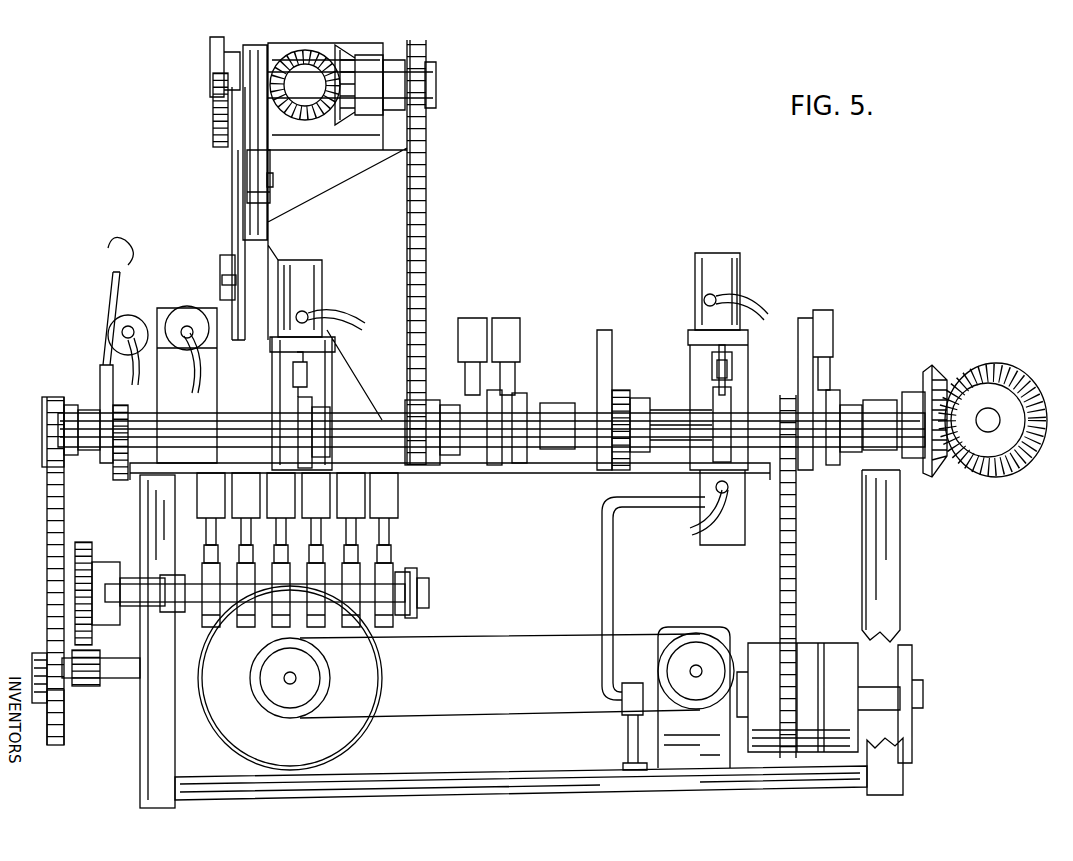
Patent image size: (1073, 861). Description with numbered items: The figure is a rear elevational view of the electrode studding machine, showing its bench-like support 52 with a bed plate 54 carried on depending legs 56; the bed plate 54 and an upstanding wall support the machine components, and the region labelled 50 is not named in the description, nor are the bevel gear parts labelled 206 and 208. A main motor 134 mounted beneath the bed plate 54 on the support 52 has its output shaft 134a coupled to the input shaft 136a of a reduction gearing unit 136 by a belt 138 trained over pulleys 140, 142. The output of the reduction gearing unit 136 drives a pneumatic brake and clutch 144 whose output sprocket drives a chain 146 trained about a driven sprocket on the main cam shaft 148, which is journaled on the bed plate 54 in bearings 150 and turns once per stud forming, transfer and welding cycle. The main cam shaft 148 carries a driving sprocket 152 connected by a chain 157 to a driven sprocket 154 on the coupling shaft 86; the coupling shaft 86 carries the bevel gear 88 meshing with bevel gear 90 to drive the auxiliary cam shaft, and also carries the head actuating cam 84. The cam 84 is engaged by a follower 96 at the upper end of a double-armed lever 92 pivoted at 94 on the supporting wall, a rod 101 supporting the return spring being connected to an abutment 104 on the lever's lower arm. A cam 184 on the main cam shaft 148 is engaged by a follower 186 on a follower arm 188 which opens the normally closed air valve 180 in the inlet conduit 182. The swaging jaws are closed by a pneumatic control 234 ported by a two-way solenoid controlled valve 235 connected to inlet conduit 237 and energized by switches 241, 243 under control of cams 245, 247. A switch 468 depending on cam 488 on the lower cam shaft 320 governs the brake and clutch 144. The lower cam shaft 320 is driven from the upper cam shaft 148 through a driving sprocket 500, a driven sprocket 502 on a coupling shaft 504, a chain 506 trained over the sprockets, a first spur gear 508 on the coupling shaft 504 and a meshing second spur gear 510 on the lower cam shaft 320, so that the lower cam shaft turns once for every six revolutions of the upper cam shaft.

The column 50 is at (272, 230).
The bench-like support 52 is at (914, 567).
The bed plate 54 is at (574, 465).
The legs 56 is at (142, 774).
The head actuating cam 84 is at (214, 52).
The coupling shaft 86 is at (312, 74).
The bevel gear 88 is at (350, 48).
The bevel gear 90 is at (290, 52).
The double-armed lever 92 is at (236, 152).
The pivot 94 is at (266, 182).
The follower 96 is at (215, 96).
The rod 101 is at (223, 280).
The abutment 104 is at (226, 268).
The main motor 134 is at (232, 725).
The output shaft 134a is at (284, 680).
The reduction gearing unit 136 is at (672, 634).
The input shaft 136a is at (697, 665).
The belt 138 is at (545, 636).
The pulley 140 is at (330, 682).
The pulley 142 is at (658, 660).
The pneumatic brake and clutch 144 is at (811, 639).
The chain 146 is at (780, 568).
The main cam shaft 148 is at (668, 412).
The bearings 150 is at (88, 410).
The driving sprocket 152 is at (410, 418).
The driven sprocket 154 is at (430, 56).
The chain 157 is at (430, 212).
The air valve 180 is at (738, 258).
The inlet conduit 182 is at (758, 312).
The cam 184 is at (722, 398).
The follower 186 is at (728, 366).
The follower arm 188 is at (719, 348).
The bevel gear 206 is at (996, 370).
The bevel gear 208 is at (938, 370).
The pneumatic control 234 is at (187, 310).
The two-way solenoid controlled valve 235 is at (150, 300).
The inlet conduit 237 is at (194, 393).
The switch 241 is at (474, 320).
The switch 243 is at (512, 320).
The cam 245 is at (492, 467).
The cam 247 is at (522, 465).
The lower cam shaft 320 is at (430, 590).
The switch 468 is at (297, 518).
The cam 488 is at (313, 627).
The driving sprocket 500 is at (47, 397).
The driven sprocket 502 is at (55, 745).
The coupling shaft 504 is at (126, 665).
The chain 506 is at (47, 506).
The first spur gear 508 is at (88, 686).
The second spur gear 510 is at (86, 542).